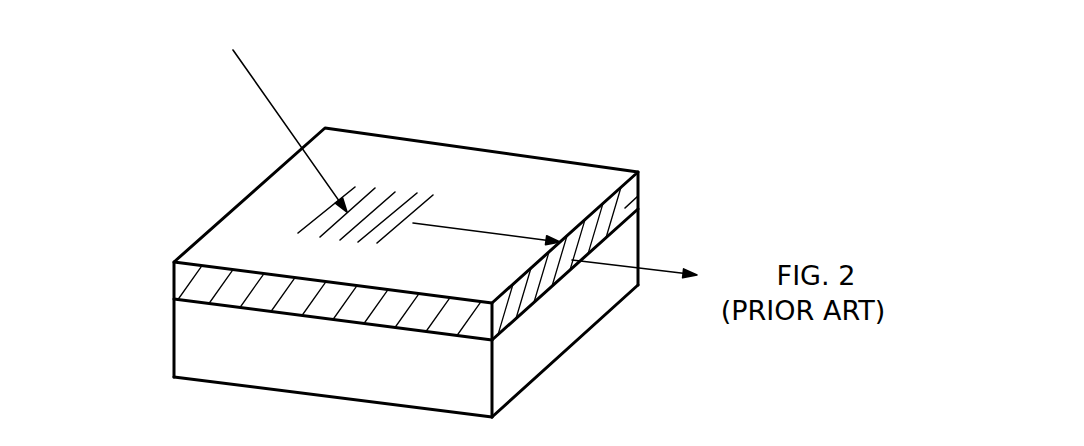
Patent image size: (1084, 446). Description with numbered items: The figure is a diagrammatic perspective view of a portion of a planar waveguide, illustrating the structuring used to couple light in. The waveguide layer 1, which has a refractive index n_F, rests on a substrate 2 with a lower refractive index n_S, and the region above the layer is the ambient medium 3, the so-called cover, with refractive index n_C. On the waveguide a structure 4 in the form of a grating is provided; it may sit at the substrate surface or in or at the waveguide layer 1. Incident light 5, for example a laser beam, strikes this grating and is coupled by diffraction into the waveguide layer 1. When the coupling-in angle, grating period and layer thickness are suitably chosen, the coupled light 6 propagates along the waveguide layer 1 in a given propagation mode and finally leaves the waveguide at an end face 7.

The waveguide layer 1 is at (193, 285).
The substrate 2 is at (192, 349).
The ambient medium 3 is at (544, 124).
The structure 4 is at (365, 199).
The light 5 is at (290, 131).
The light 6 is at (555, 238).
The end face 7 is at (638, 196).